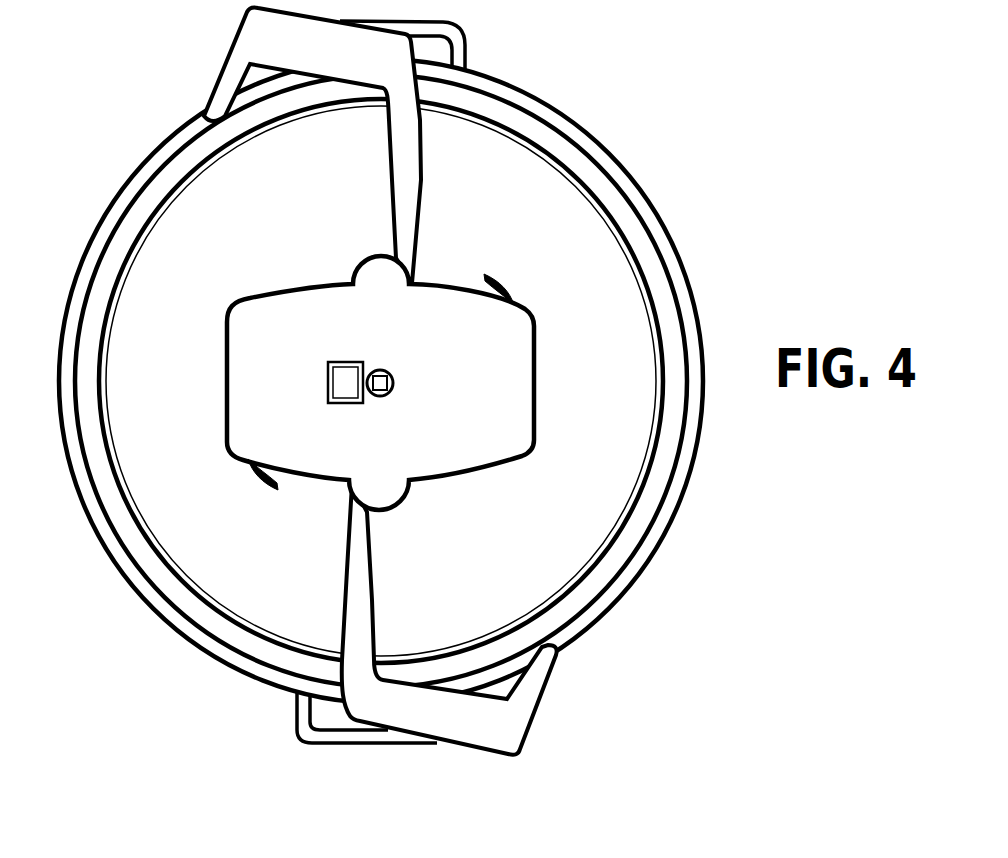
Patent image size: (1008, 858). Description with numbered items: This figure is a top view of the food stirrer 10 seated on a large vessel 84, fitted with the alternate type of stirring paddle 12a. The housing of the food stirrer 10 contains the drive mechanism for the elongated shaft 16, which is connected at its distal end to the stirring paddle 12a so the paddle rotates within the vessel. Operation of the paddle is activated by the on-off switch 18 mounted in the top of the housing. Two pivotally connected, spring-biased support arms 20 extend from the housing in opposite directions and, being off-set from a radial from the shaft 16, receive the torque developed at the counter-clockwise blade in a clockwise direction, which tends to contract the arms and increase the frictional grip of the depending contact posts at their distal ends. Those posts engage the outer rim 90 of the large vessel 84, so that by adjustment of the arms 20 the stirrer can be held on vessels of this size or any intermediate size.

The food stirrer 10 is at (552, 395).
The stirring paddle 12a is at (511, 289).
The elongated shaft 16 is at (393, 378).
The on-off switch 18 is at (333, 403).
The support arms 20 is at (422, 201).
The large vessel 84 is at (607, 159).
The outer rim 90 is at (645, 571).